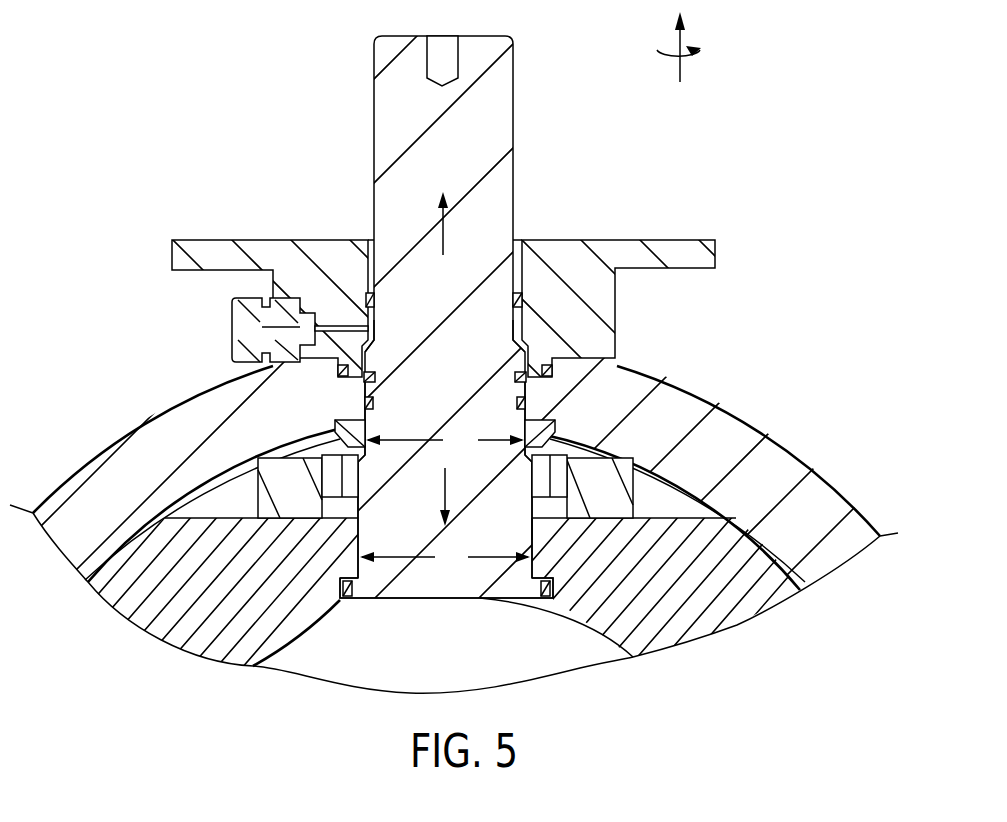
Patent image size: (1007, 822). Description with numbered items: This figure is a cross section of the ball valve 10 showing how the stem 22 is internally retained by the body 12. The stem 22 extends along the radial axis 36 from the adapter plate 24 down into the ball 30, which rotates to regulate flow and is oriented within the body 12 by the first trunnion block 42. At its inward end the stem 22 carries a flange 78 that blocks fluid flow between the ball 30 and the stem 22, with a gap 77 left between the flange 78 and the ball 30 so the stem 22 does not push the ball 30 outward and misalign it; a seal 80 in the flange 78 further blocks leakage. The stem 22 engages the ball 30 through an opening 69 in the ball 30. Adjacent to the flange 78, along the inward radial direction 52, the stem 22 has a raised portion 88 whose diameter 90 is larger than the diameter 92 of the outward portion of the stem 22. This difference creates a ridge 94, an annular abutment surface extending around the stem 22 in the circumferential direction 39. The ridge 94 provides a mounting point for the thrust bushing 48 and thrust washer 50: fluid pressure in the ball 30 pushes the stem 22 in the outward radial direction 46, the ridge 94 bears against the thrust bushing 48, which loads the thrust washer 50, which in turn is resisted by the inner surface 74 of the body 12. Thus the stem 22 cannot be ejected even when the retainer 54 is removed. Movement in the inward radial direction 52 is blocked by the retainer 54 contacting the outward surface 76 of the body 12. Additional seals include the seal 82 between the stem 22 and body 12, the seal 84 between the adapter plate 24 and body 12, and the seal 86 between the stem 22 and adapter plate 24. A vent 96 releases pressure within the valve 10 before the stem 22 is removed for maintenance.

The ball valve 10 is at (124, 110).
The body 12 is at (740, 405).
The stem 22 is at (393, 100).
The adapter plate 24 is at (600, 240).
The ball 30 is at (600, 622).
The radial axis 36 is at (680, 42).
The circumferential direction 39 is at (660, 60).
The first trunnion block 42 is at (615, 470).
The outward radial direction 46 is at (447, 228).
The thrust bushing 48 is at (548, 433).
The thrust washer 50 is at (555, 410).
The inward radial direction 52 is at (445, 478).
The retainer 54 is at (378, 376).
The opening 69 is at (538, 533).
The inner surface 74 is at (337, 432).
The outward surface 76 is at (368, 375).
The gap 77 is at (555, 582).
The flange 78 is at (352, 602).
The seal 80 is at (341, 587).
The seal 82 is at (374, 404).
The seal 84 is at (338, 375).
The seal 86 is at (375, 300).
The raised portion 88 is at (352, 540).
The diameter 90 is at (445, 557).
The diameter 92 is at (445, 440).
The ridge 94 is at (367, 462).
The vent 96 is at (243, 322).